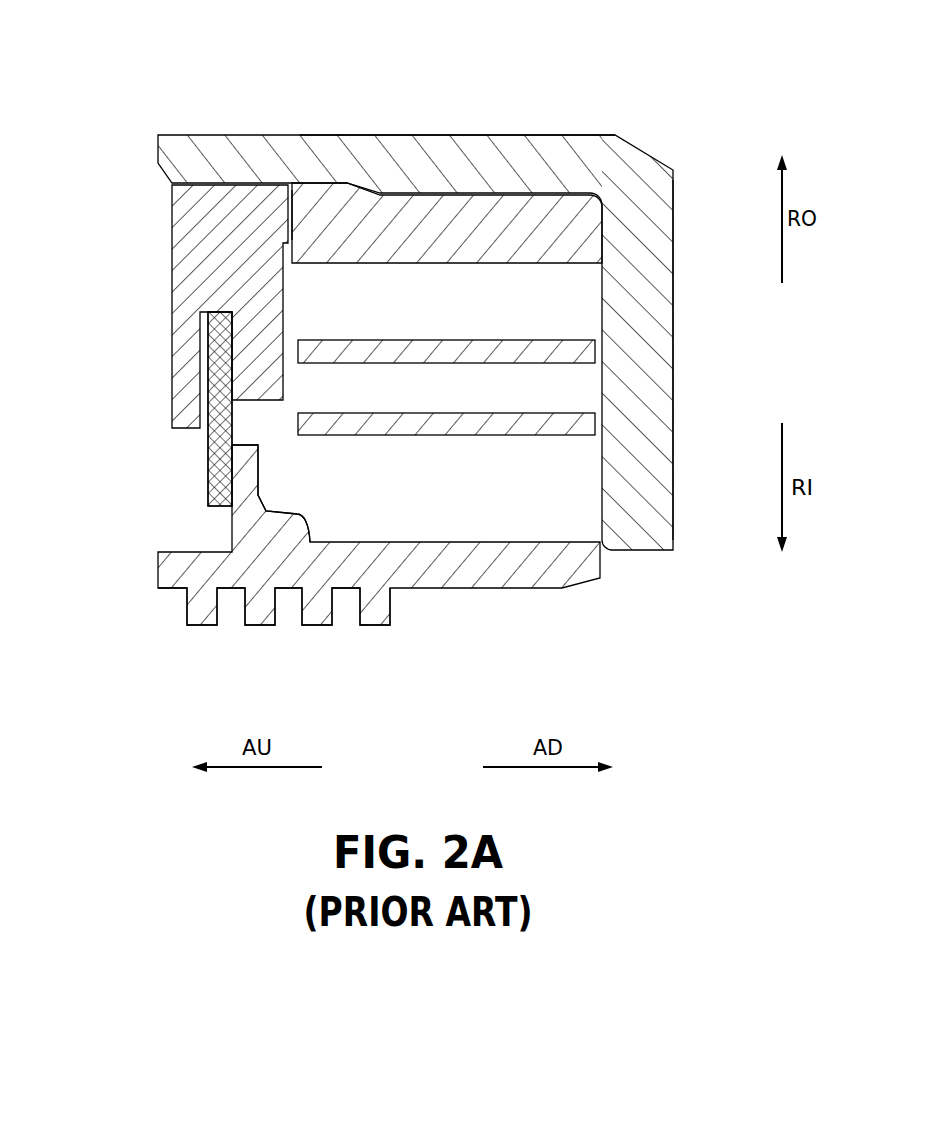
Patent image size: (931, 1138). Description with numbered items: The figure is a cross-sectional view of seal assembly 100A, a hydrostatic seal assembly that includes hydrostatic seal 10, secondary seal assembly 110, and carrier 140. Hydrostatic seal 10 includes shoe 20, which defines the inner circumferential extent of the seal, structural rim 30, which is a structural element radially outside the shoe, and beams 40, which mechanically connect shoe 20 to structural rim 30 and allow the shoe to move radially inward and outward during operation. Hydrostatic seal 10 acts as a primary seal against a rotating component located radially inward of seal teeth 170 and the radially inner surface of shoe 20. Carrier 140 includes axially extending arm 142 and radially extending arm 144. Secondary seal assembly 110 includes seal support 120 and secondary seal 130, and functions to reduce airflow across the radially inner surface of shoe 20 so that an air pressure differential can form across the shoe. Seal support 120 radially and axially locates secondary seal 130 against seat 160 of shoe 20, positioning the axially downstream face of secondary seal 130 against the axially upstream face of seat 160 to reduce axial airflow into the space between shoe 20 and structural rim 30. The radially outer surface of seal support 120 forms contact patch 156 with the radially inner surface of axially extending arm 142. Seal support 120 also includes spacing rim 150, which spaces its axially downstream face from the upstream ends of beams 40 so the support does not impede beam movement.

The seal assembly 100A is at (199, 70).
The hydrostatic seal 10 is at (613, 608).
The shoe 20 is at (493, 589).
The structural rim 30 is at (387, 242).
The beams 40 is at (587, 423).
The secondary seal assembly 110 is at (118, 259).
The seal support 120 is at (208, 240).
The secondary seal 130 is at (208, 448).
The carrier 140 is at (502, 172).
The axially extending arm 142 is at (423, 134).
The radially extending arm 144 is at (673, 221).
The spacing rim 150 is at (293, 205).
The contact patch 156 is at (232, 170).
The seat 160 is at (253, 507).
The seal teeth 170 is at (264, 655).